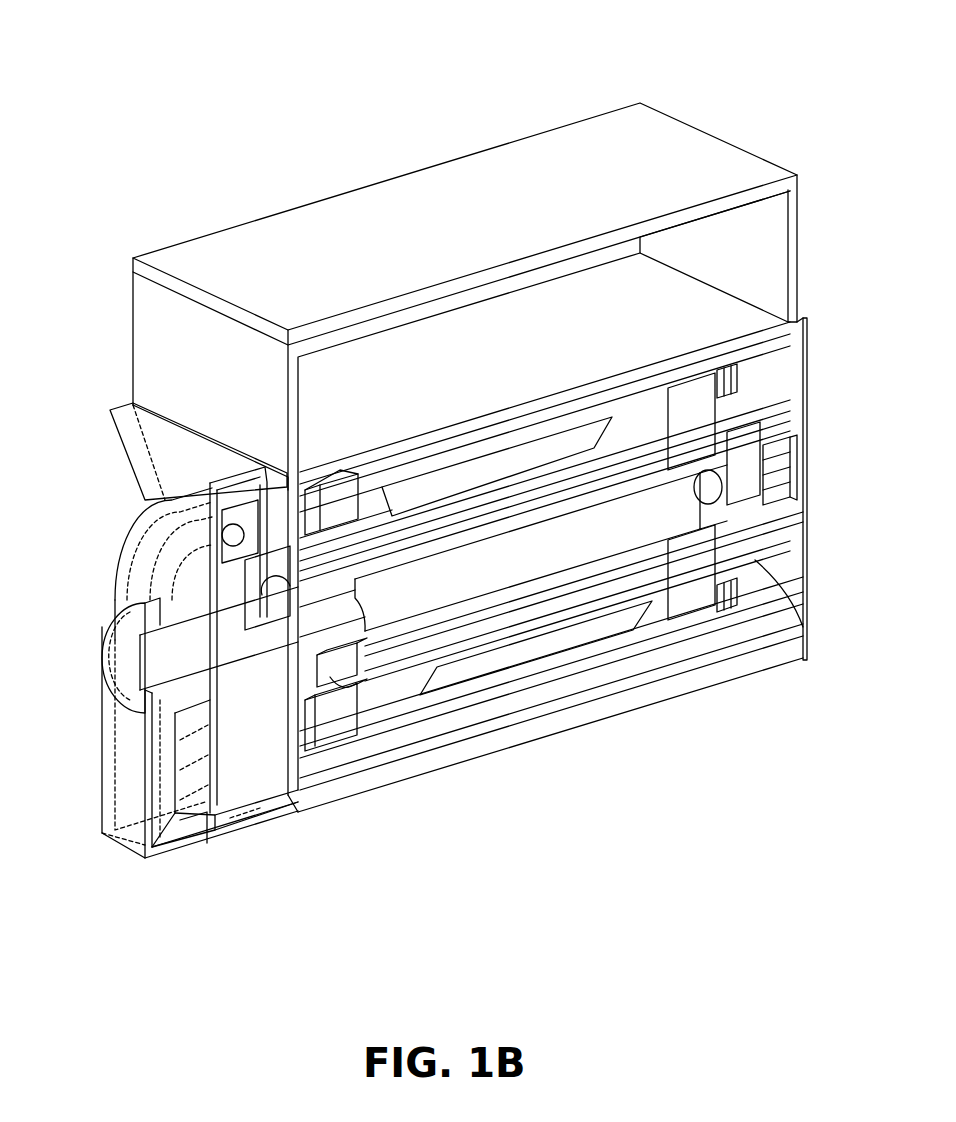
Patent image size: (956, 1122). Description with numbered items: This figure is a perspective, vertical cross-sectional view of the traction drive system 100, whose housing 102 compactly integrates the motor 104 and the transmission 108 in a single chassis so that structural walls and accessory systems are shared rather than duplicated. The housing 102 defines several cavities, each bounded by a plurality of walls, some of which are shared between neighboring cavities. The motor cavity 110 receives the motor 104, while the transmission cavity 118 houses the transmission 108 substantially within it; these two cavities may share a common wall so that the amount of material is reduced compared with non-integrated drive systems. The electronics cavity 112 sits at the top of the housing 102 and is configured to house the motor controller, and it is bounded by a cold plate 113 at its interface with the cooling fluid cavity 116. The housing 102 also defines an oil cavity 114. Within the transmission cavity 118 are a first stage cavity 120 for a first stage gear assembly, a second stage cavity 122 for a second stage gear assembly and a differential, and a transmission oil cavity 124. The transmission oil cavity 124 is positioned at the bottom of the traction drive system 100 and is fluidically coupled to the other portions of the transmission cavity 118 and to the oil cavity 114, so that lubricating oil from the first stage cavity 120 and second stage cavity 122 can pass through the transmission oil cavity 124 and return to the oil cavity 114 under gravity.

The traction drive system 100 is at (578, 58).
The housing 102 is at (613, 712).
The motor 104 is at (458, 714).
The transmission 108 is at (70, 578).
The motor cavity 110 is at (768, 585).
The electronics cavity 112 is at (775, 258).
The cold plate 113 is at (741, 343).
The oil cavity 114 is at (540, 712).
The cooling fluid cavity 116 is at (705, 650).
The transmission cavity 118 is at (158, 872).
The first stage cavity 120 is at (283, 719).
The second stage cavity 122 is at (182, 840).
The transmission oil cavity 124 is at (248, 803).